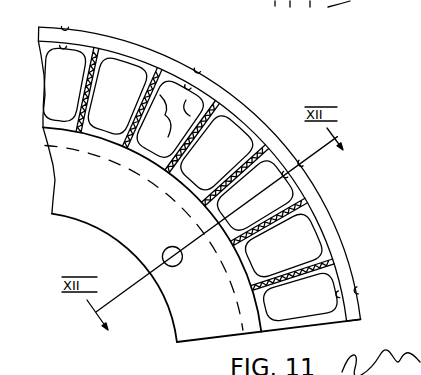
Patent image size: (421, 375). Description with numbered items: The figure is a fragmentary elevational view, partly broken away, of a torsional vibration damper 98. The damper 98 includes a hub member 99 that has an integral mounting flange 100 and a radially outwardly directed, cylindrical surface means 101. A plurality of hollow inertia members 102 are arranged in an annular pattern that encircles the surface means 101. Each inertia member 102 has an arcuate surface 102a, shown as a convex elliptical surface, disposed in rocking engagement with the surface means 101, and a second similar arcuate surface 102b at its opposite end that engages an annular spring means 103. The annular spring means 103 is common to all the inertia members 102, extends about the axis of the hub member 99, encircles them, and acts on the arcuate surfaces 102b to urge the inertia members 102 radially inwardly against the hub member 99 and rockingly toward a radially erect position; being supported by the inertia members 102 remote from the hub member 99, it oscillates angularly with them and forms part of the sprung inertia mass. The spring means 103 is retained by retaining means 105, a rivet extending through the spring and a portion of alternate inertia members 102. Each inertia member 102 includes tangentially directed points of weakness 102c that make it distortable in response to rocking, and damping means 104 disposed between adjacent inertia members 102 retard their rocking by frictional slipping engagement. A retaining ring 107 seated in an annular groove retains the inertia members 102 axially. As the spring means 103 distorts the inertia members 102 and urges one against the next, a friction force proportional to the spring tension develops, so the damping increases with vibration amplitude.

The torsional vibration damper 98 is at (224, 160).
The hub member 99 is at (249, 329).
The mounting flange 100 is at (195, 331).
The surface means 101 is at (130, 149).
The inertia member 102 is at (223, 110).
The arcuate surface 102a is at (153, 178).
The second arcuate surface 102b is at (117, 96).
The points of weakness 102c is at (170, 119).
The annular spring means 103 is at (186, 61).
The damping means 104 is at (199, 207).
The retaining means 105 is at (200, 69).
The retaining ring 107 is at (230, 244).